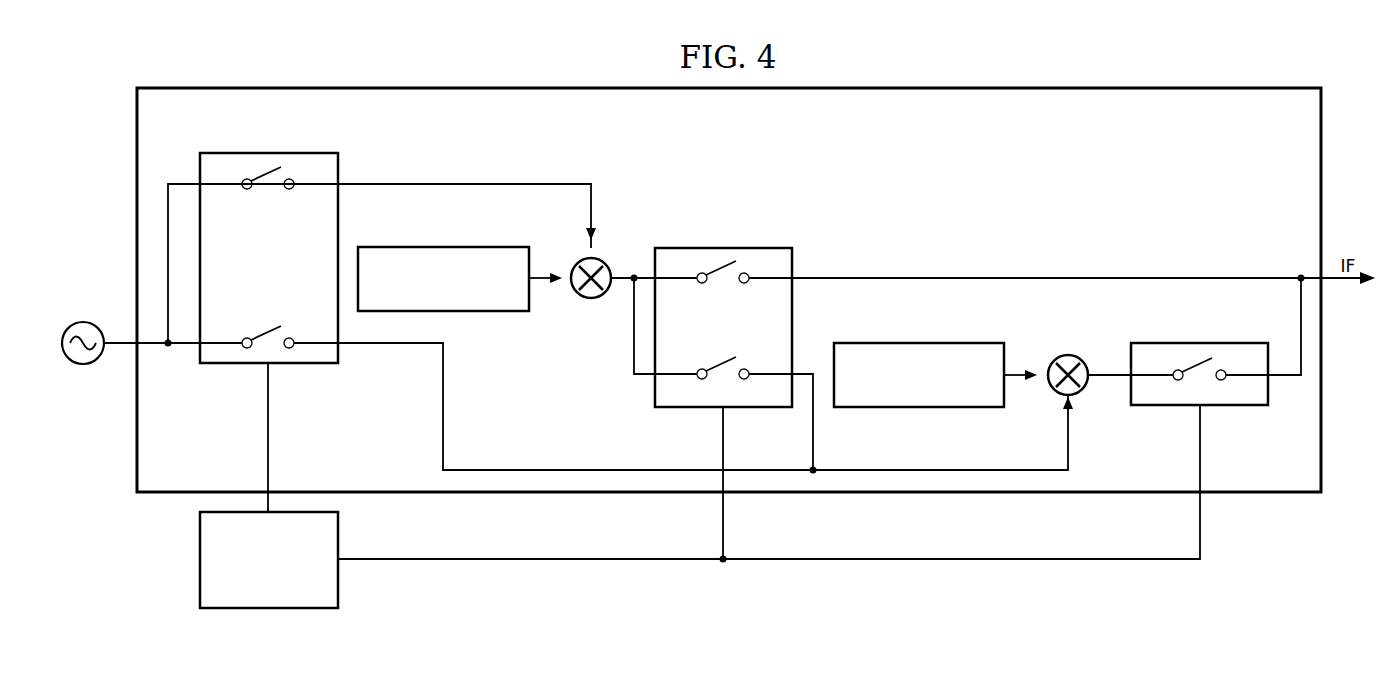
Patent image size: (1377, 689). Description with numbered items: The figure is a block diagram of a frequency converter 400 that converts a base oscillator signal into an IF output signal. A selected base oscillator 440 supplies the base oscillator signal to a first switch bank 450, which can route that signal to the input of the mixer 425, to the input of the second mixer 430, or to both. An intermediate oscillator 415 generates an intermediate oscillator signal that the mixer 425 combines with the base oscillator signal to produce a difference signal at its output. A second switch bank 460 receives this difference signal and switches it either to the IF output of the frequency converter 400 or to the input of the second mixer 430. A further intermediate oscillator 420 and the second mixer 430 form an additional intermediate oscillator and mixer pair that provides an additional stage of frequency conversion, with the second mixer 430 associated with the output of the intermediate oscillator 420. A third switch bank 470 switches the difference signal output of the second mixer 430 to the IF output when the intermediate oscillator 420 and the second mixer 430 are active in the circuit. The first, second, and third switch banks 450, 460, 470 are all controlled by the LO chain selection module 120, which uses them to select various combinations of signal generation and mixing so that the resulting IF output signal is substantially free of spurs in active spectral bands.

The frequency converter 400 is at (418, 86).
The base oscillator 440 is at (83, 365).
The first switch bank 450 is at (258, 152).
The intermediate oscillator 415 is at (445, 246).
The mixer 425 is at (607, 265).
The second switch bank 460 is at (735, 247).
The intermediate oscillator 420 is at (920, 408).
The second mixer 430 is at (1083, 361).
The third switch bank 470 is at (1226, 408).
The LO chain selection module 120 is at (199, 570).